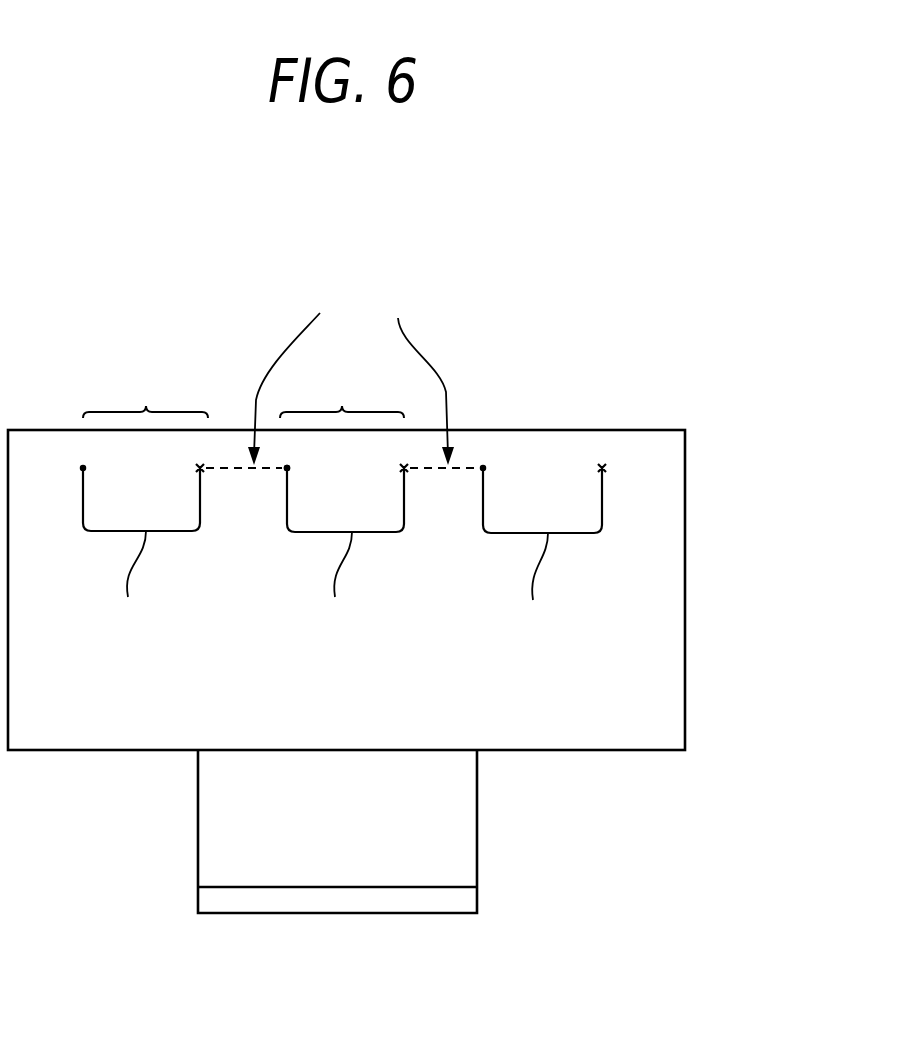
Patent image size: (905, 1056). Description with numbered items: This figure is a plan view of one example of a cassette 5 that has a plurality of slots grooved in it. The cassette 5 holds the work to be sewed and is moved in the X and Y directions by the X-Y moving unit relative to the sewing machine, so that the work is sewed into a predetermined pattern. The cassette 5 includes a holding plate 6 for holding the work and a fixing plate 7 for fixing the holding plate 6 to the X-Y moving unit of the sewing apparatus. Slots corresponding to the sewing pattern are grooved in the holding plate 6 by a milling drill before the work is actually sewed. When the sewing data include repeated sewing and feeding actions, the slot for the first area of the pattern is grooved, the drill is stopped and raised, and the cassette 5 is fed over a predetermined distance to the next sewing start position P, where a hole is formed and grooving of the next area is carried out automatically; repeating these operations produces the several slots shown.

The cassette 5 is at (431, 460).
The holding plate 6 is at (685, 659).
The fixing plate 7 is at (477, 845).
The sewing start position P is at (283, 473).